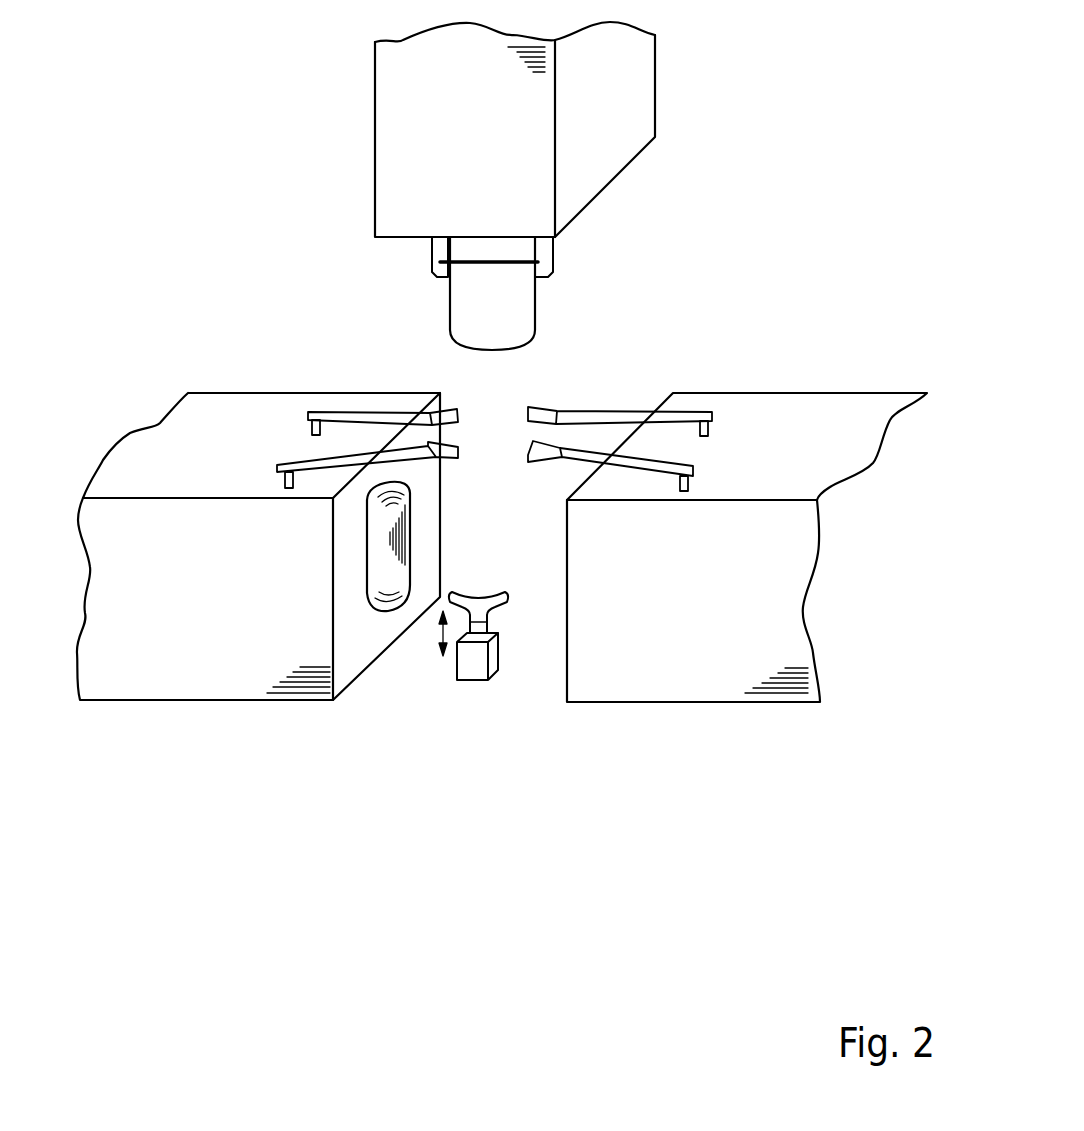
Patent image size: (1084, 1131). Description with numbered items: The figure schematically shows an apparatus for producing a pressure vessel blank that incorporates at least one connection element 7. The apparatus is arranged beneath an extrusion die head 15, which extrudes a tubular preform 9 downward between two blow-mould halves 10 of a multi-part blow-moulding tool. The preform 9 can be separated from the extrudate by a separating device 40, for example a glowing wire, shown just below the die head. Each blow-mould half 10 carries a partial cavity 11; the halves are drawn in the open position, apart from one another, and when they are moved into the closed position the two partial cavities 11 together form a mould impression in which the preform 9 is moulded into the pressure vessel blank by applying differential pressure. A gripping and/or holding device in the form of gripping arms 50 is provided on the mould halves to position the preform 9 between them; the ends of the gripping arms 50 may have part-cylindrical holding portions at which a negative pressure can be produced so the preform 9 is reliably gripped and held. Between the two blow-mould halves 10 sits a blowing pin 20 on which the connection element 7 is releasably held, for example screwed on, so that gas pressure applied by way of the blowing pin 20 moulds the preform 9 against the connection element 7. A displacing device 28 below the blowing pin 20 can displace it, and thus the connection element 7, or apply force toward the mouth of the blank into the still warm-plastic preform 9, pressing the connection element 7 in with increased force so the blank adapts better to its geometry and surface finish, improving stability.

The extrusion die head 15 is at (603, 143).
The preform 9 is at (507, 297).
The separating device 40 is at (477, 263).
The blow-mould halves 10 is at (207, 677).
The partial cavity 11 is at (378, 573).
The gripping arms 50 is at (363, 417).
The connection element 7 is at (483, 598).
The blowing pin 20 is at (475, 632).
The displacing device 28 is at (475, 670).